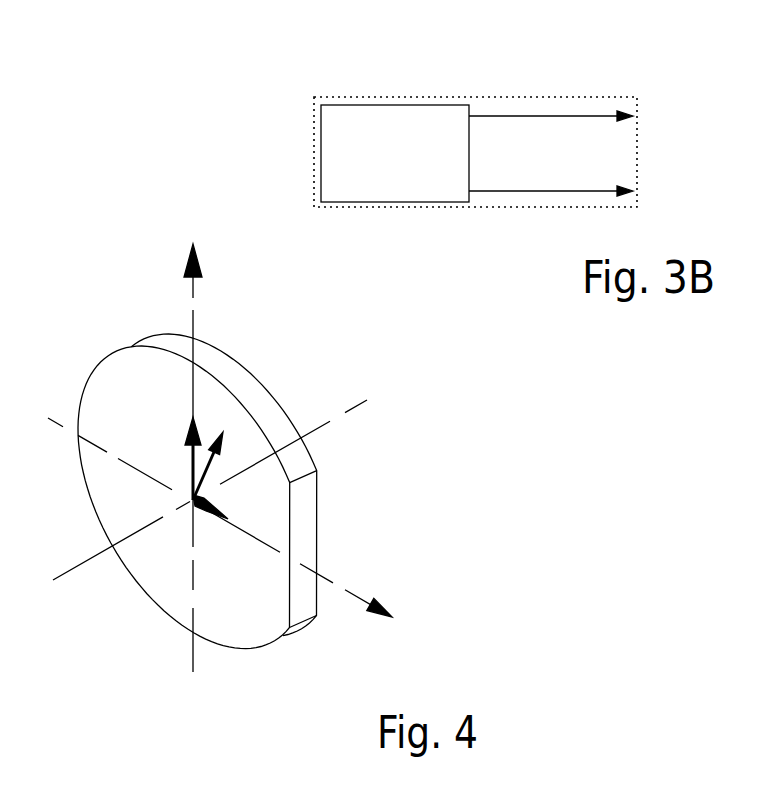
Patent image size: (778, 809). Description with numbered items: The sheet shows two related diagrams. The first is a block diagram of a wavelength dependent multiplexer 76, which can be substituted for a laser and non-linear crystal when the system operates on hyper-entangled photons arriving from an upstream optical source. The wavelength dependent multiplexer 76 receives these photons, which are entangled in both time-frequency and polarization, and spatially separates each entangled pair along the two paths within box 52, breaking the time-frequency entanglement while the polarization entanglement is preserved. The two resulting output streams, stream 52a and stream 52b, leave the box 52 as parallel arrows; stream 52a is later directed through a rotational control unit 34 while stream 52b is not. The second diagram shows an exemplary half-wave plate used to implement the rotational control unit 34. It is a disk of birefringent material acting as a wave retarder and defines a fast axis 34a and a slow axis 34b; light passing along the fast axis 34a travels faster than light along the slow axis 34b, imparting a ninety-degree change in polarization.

In FIG. 3B, the wavelength dependent multiplexer 76 is at (371, 105).
In FIG. 3B, the box 52 is at (562, 97).
In FIG. 3B, the stream 52a is at (577, 117).
In FIG. 3B, the stream 52b is at (578, 191).
In FIG. 4, the rotational control unit 34 is at (117, 352).
In FIG. 4, the fast axis 34a is at (187, 258).
In FIG. 4, the slow axis 34b is at (248, 517).